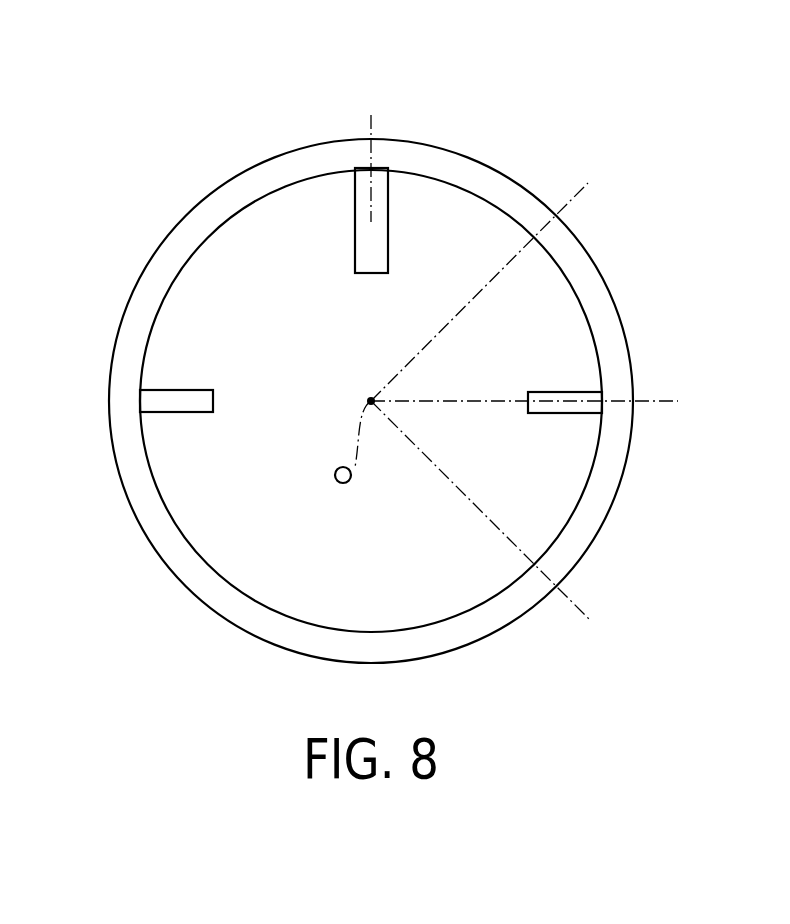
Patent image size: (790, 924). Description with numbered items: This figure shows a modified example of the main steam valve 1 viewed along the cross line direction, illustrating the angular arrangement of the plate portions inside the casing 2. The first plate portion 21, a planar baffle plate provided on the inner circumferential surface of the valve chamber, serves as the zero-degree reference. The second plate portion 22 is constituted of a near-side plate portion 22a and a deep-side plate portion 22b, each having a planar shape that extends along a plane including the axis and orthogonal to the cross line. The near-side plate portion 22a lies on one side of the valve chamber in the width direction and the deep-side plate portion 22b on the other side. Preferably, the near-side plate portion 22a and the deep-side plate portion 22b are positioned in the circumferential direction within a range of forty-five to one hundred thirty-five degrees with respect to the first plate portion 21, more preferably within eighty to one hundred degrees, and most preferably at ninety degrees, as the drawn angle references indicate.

The main steam valve 1 is at (226, 106).
The casing 2 is at (157, 277).
The first plate portion 21 is at (383, 210).
The second plate portion 22 is at (366, 374).
The near-side plate portion 22a is at (178, 400).
The deep-side plate portion 22b is at (571, 392).